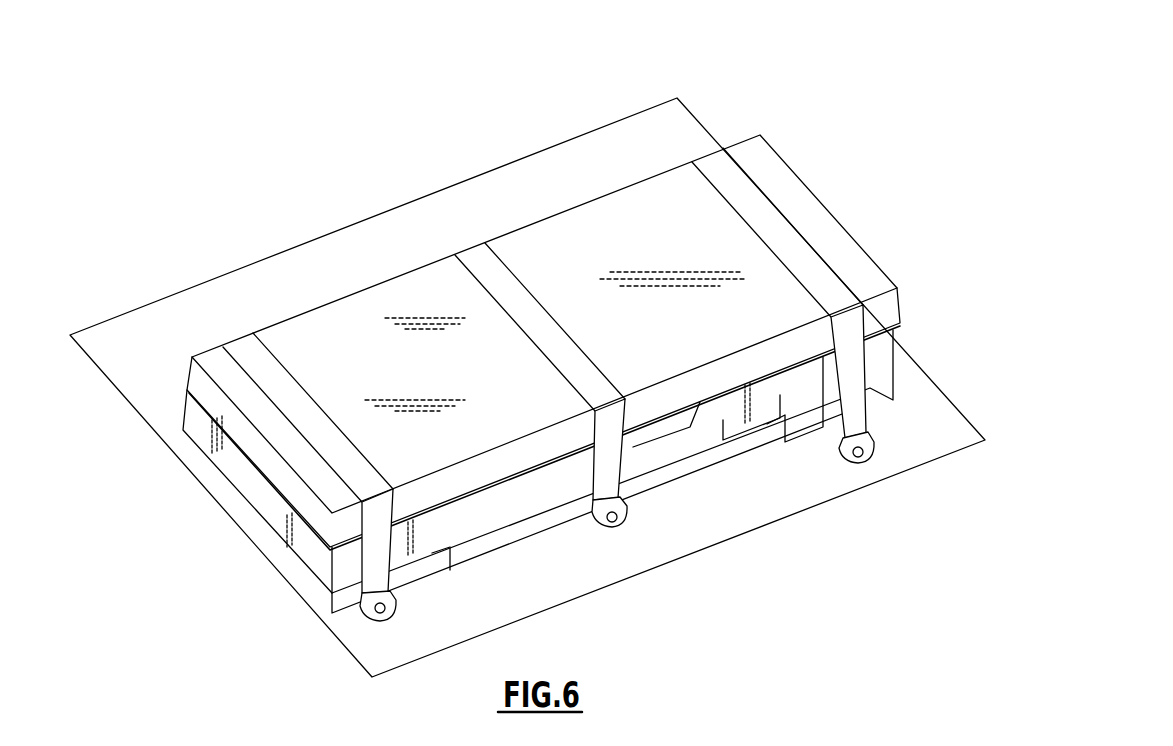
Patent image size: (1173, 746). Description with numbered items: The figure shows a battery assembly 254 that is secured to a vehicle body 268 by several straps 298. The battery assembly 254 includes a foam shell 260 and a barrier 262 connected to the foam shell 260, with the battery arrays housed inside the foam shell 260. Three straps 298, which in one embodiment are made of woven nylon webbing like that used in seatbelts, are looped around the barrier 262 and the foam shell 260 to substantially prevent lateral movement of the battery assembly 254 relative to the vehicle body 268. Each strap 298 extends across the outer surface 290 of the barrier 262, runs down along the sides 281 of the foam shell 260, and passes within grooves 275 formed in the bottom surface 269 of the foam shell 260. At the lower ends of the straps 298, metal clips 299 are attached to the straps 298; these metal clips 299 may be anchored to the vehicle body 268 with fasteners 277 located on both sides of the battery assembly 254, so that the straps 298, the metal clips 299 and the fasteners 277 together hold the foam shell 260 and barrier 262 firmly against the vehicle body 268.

The battery assembly 254 is at (529, 346).
The foam shell 260 is at (893, 347).
The barrier 262 is at (825, 233).
The vehicle body 268 is at (915, 420).
The bottom surface 269 is at (505, 548).
The grooves 275 is at (443, 553).
The fasteners 277 is at (392, 612).
The sides 281 is at (678, 458).
The outer surface 290 is at (448, 382).
The straps 298 is at (290, 383).
The metal clips 299 is at (367, 605).